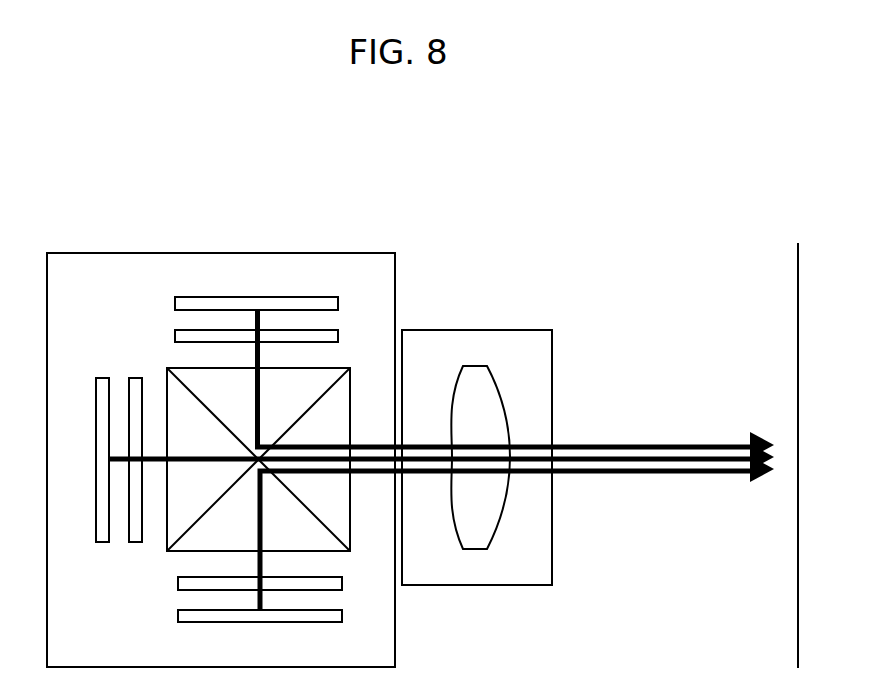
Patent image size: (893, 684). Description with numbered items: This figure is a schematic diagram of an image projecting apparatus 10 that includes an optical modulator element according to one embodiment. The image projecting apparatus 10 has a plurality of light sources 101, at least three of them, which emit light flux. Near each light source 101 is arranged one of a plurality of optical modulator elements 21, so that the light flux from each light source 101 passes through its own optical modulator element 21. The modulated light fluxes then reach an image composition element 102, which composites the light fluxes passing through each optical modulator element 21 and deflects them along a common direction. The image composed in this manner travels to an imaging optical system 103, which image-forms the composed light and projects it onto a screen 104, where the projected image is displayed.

The image projecting apparatus 10 is at (506, 193).
The optical modulator element 21 is at (338, 336).
The light source 101 is at (327, 297).
The image composition element 102 is at (167, 368).
The imaging optical system 103 is at (553, 563).
The screen 104 is at (798, 578).